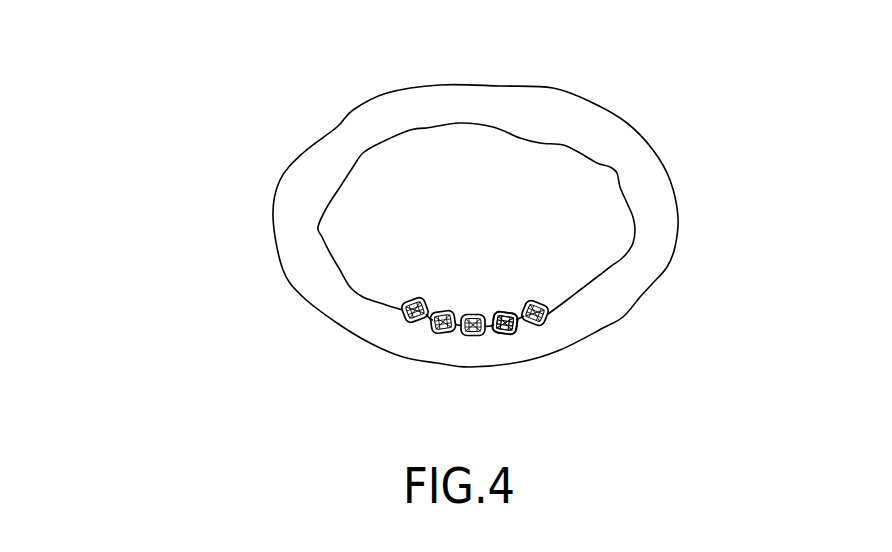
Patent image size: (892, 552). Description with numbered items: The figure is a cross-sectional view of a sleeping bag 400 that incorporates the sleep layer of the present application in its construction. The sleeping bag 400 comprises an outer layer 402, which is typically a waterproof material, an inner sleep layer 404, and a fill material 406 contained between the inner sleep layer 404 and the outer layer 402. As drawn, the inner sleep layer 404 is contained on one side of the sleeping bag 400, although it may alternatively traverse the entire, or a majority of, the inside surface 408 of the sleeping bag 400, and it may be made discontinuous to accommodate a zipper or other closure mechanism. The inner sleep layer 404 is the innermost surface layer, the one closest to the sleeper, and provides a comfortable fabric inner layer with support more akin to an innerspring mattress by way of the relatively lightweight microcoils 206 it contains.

The sleeping bag 400 is at (258, 121).
The outer layer 402 is at (657, 155).
The fill material 406 is at (432, 102).
The inside surface 408 is at (565, 145).
The microcoils 206 is at (465, 338).
The inner sleep layer 404 is at (528, 325).